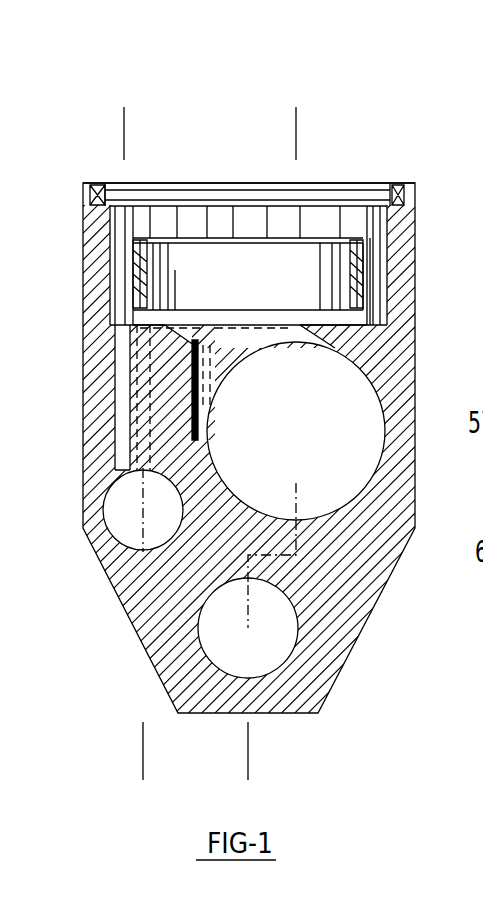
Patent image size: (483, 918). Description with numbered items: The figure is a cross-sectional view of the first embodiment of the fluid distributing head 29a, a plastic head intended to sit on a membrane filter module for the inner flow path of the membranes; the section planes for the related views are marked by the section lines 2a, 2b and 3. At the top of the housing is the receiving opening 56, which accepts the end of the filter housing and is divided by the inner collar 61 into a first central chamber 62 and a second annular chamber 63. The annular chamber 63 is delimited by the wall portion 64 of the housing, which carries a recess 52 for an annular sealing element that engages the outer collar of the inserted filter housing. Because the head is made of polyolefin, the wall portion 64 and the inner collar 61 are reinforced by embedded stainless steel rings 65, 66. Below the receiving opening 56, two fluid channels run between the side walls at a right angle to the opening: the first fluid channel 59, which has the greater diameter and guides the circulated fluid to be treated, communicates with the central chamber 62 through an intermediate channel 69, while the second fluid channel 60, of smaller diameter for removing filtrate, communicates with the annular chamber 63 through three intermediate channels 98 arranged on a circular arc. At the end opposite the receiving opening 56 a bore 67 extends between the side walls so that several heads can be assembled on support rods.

The section line 3 is at (248, 60).
The fluid distributing head 29a is at (170, 135).
The section line 2a is at (112, 120).
The section line 2b is at (284, 120).
The recess 52 is at (140, 185).
The first central chamber 62 is at (246, 262).
The receiving opening 56 is at (330, 220).
The stainless steel ring 66 is at (90, 188).
The wall portion 64 is at (405, 228).
The stainless steel ring 65 is at (365, 275).
The collar 61 is at (378, 300).
The second annular chamber 63 is at (126, 308).
The intermediate channel 69 is at (218, 370).
The first fluid channel 59 is at (365, 453).
The intermediate channels 98 is at (132, 422).
The second fluid channel 60 is at (132, 527).
The bore 67 is at (272, 648).